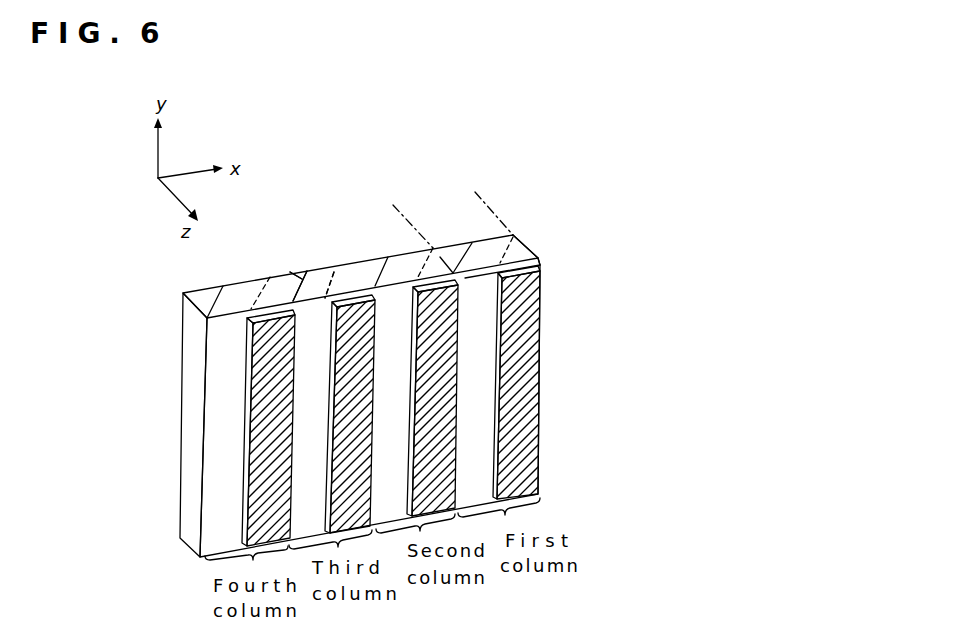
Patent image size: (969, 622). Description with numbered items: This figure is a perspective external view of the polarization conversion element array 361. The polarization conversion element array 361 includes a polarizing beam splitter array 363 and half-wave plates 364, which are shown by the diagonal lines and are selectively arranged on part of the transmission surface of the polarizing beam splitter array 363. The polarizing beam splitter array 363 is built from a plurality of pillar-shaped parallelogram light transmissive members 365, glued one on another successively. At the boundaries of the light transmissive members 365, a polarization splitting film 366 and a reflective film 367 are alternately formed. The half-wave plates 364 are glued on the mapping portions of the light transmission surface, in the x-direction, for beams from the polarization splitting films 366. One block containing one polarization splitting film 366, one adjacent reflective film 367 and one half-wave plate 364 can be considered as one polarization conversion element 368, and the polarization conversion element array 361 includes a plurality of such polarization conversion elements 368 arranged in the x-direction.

The polarization conversion element array 361 is at (579, 205).
The polarizing beam splitter array 363 is at (541, 245).
The half-wave plate 364 is at (538, 469).
The light transmissive member 365 is at (322, 268).
The polarization splitting film 366 is at (334, 272).
The reflective film 367 is at (288, 272).
The polarization conversion element 368 is at (475, 192).